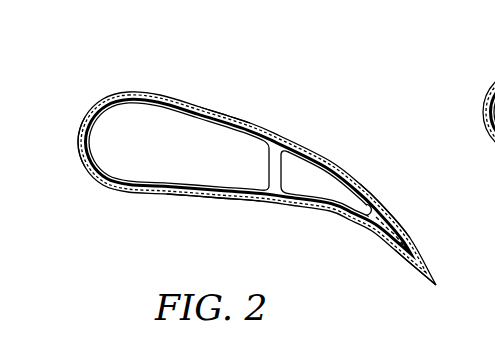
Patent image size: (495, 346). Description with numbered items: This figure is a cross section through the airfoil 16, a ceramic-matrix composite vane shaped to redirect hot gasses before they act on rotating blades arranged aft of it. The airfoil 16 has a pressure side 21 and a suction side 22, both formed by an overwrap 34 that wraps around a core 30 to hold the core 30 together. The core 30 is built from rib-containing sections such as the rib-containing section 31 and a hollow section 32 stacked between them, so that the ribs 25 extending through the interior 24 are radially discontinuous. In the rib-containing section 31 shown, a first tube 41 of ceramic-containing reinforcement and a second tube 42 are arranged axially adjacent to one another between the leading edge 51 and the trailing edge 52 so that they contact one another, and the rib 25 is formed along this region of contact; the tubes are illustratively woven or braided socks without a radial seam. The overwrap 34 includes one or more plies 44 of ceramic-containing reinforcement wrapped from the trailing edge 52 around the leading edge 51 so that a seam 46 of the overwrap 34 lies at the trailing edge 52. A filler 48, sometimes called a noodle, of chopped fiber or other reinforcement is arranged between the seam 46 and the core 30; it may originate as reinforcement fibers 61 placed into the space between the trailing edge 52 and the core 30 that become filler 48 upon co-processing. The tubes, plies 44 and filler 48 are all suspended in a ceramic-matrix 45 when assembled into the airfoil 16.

The airfoil 16 is at (371, 134).
The pressure side 21 is at (220, 201).
The suction side 22 is at (234, 115).
The interior 24 is at (190, 138).
The rib 25 is at (296, 172).
The core 30 is at (389, 201).
The rib-containing section 31 is at (93, 101).
The hollow section 32 is at (488, 75).
The overwrap 34 is at (373, 177).
The first tube 41 is at (141, 174).
The second tube 42 is at (314, 187).
The plies 44 is at (142, 88).
The ceramic-matrix 45 is at (294, 138).
The seam 46 is at (448, 285).
The filler 48 is at (376, 250).
The leading edge 51 is at (78, 140).
The trailing edge 52 is at (437, 287).
The reinforcement fibers 61 is at (408, 262).